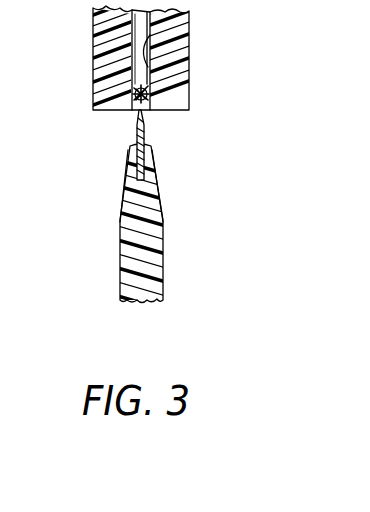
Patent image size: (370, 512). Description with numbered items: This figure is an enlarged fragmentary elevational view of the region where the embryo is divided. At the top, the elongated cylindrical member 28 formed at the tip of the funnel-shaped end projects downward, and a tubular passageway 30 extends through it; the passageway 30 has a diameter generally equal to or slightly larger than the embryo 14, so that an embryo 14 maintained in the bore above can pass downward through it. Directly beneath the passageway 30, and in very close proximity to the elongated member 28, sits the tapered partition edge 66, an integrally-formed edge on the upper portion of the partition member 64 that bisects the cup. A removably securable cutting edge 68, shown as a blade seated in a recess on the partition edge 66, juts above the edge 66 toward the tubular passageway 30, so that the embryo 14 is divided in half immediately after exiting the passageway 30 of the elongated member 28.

The embryo 14 is at (189, 88).
The elongated cylindrical member 28 is at (93, 58).
The tubular passageway 30 is at (152, 35).
The partition member 64 is at (164, 242).
The tapered partition edge 66 is at (124, 190).
The cutting edge 68 is at (144, 132).